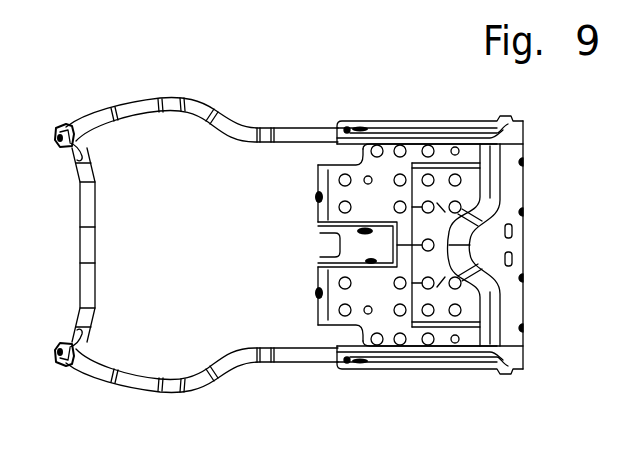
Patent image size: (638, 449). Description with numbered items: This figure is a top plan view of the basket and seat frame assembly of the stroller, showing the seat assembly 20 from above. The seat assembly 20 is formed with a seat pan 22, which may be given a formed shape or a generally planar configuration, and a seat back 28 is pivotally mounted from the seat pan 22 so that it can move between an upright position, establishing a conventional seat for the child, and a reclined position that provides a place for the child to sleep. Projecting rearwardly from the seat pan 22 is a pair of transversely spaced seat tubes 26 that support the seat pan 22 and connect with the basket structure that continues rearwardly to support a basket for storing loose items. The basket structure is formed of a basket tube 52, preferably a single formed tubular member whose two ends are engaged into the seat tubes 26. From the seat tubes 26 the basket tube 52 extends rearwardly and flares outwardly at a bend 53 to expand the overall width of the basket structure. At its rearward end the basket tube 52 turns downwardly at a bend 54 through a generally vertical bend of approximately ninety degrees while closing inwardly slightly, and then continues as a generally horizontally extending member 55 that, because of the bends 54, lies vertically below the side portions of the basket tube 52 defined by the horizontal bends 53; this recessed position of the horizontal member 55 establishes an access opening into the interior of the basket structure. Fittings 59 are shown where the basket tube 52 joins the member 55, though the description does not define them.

The seat assembly 20 is at (413, 256).
The seat pan 22 is at (317, 218).
The seat tubes 26 is at (322, 128).
The seat back 28 is at (169, 240).
The basket tube 52 is at (117, 107).
The bend 53 is at (173, 98).
The bend 54 is at (83, 151).
The horizontally extending member 55 is at (92, 273).
The end fitting 59 is at (56, 132).